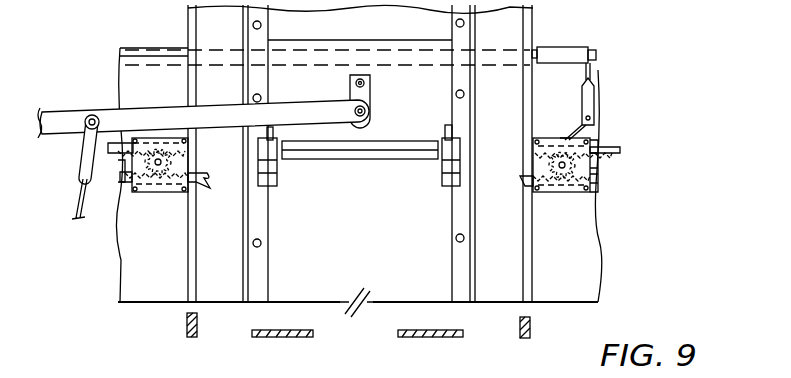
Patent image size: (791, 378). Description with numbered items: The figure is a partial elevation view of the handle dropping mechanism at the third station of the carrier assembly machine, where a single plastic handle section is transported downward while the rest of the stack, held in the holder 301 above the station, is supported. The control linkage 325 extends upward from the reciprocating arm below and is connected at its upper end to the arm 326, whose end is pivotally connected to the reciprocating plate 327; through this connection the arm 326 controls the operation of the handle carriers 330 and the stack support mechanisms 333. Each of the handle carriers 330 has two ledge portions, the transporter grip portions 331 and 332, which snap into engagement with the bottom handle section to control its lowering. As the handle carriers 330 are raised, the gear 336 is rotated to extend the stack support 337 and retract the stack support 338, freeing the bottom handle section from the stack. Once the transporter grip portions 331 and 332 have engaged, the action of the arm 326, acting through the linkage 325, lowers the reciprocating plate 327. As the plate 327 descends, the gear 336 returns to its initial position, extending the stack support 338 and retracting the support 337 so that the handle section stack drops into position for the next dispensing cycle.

The holder 301 is at (530, 33).
The control linkage 325 is at (78, 187).
The arm 326 is at (312, 114).
The reciprocating plate 327 is at (428, 106).
The handle carriers 330 is at (278, 172).
The transporter grip portion 331 is at (266, 156).
The transporter grip portion 332 is at (266, 178).
The stack support mechanisms 333 is at (163, 193).
The gear 336 is at (118, 181).
The stack support 337 is at (143, 143).
The stack support 338 is at (201, 183).